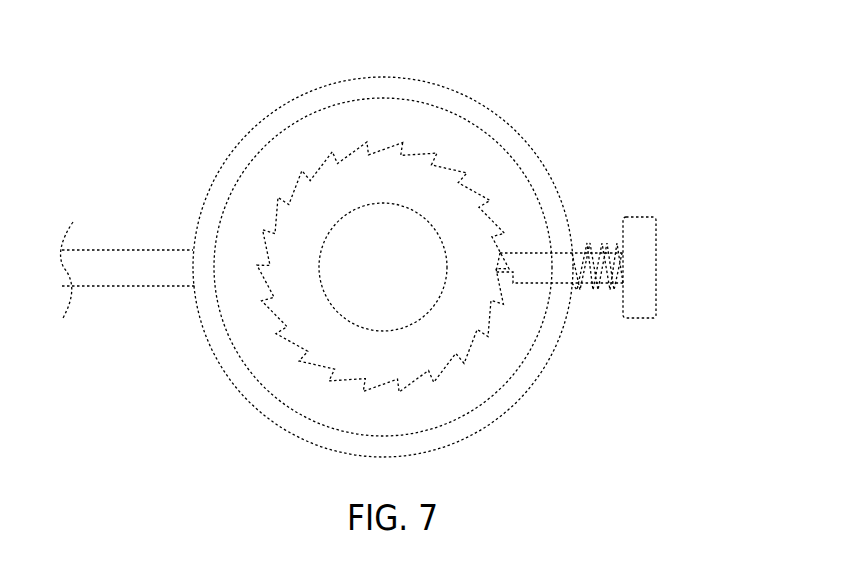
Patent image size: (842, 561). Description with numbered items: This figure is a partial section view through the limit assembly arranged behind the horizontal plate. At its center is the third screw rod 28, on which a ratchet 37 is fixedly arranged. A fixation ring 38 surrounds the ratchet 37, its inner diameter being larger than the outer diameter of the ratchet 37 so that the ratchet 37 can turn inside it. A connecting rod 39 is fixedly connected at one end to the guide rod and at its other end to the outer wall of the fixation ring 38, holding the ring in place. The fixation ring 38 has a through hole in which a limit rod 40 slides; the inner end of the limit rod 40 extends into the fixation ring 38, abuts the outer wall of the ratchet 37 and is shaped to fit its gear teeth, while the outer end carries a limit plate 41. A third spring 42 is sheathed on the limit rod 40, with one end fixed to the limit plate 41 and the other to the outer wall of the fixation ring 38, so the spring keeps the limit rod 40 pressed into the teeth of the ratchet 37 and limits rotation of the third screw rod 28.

The third screw rod 28 is at (383, 267).
The ratchet 37 is at (405, 185).
The fixation ring 38 is at (232, 172).
The connecting rod 39 is at (155, 271).
The limit rod 40 is at (523, 265).
The limit plate 41 is at (643, 267).
The third spring 42 is at (575, 285).